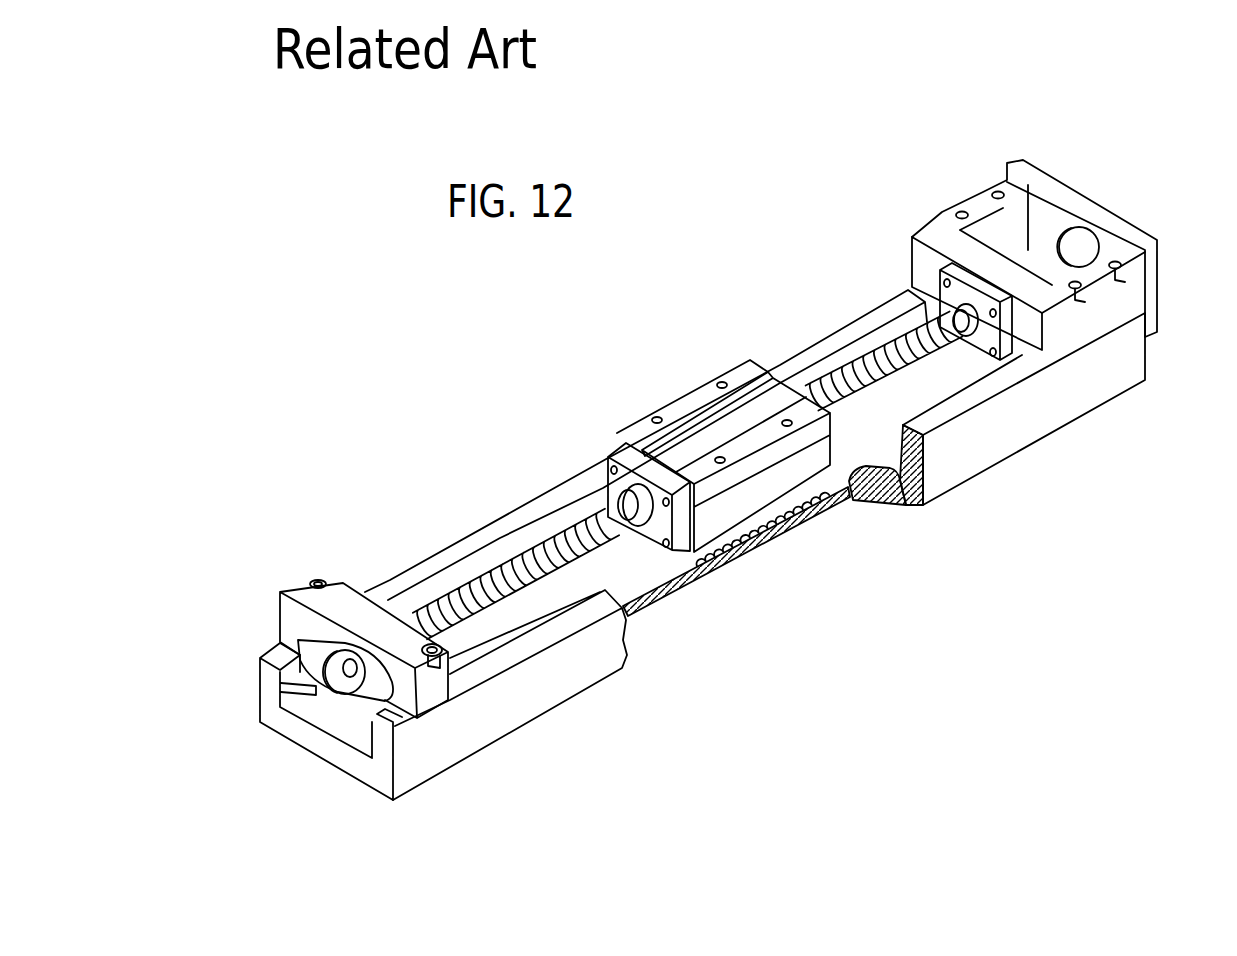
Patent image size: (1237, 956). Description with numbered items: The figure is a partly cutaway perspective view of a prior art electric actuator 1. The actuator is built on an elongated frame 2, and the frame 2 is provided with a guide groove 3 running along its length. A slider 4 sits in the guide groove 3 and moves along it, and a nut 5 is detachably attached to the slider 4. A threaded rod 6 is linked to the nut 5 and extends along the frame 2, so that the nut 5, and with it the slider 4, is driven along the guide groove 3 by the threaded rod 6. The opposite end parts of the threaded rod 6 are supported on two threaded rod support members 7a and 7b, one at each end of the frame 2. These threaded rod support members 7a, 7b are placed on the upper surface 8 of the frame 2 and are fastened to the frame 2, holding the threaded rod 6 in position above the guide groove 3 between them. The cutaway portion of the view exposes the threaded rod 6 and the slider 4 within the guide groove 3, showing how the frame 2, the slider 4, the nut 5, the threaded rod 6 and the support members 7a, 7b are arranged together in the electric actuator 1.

The electric actuator 1 is at (708, 473).
The frame 2 is at (555, 712).
The guide groove 3 is at (862, 433).
The slider 4 is at (752, 505).
The nut 5 is at (626, 455).
The threaded rod 6 is at (502, 573).
The threaded rod support member 7a is at (297, 588).
The threaded rod support member 7b is at (932, 228).
The upper surface 8 is at (963, 402).